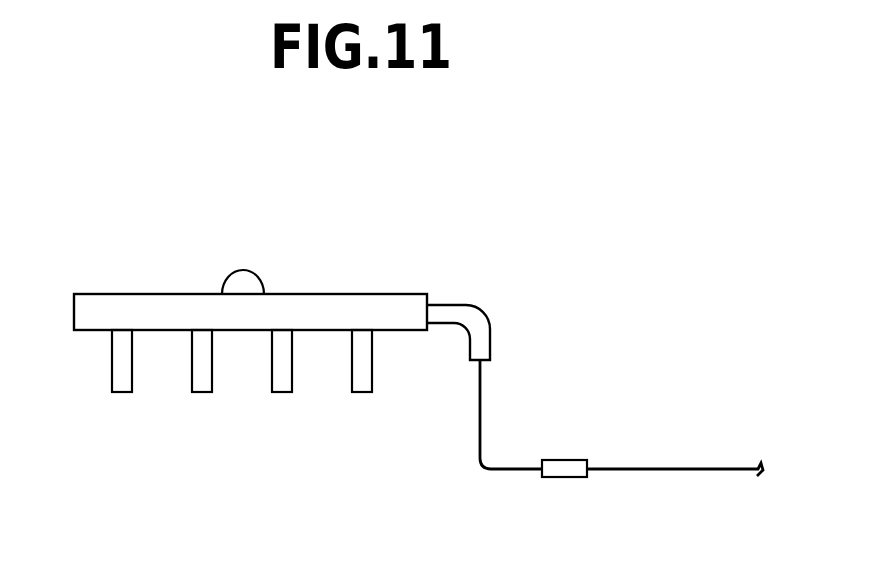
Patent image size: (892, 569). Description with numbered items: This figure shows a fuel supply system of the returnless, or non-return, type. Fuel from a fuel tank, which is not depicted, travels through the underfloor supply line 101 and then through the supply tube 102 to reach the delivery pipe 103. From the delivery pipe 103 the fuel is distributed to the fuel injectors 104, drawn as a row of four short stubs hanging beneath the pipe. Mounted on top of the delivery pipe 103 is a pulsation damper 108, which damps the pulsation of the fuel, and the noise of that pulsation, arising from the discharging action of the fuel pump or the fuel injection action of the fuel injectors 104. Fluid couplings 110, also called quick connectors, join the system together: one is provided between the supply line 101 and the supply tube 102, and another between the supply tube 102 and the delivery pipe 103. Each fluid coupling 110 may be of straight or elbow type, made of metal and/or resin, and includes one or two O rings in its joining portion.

The underfloor supply line 101 is at (705, 468).
The supply tube 102 is at (480, 402).
The delivery pipe 103 is at (123, 306).
The fuel injectors 104 is at (202, 392).
The pulsation damper 108 is at (245, 282).
The fluid couplings 110 is at (468, 320).